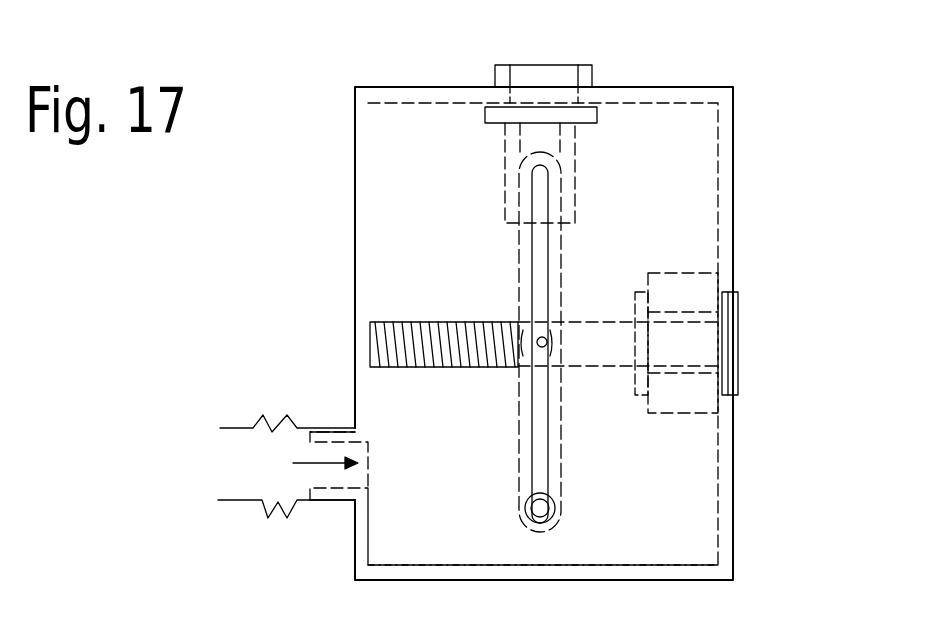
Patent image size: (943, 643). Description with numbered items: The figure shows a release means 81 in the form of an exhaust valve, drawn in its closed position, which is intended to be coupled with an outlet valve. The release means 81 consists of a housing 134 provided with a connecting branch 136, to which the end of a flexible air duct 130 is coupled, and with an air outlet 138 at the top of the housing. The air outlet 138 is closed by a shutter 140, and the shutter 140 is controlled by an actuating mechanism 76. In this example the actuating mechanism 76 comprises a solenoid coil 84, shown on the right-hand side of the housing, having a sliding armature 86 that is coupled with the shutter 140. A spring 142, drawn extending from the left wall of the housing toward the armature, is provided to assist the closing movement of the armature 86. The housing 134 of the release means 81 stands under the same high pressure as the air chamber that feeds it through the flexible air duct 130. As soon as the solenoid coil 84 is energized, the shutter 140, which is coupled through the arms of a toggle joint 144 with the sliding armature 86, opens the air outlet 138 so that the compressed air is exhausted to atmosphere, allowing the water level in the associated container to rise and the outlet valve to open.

The actuating mechanism 76 is at (658, 258).
The release means 81 is at (727, 72).
The solenoid coil 84 is at (688, 280).
The sliding armature 86 is at (627, 347).
The flexible air duct 130 is at (225, 428).
The housing 134 is at (730, 162).
The connecting branch 136 is at (327, 497).
The air outlet 138 is at (572, 271).
The shutter 140 is at (483, 117).
The spring 142 is at (402, 338).
The toggle joint 144 is at (617, 448).